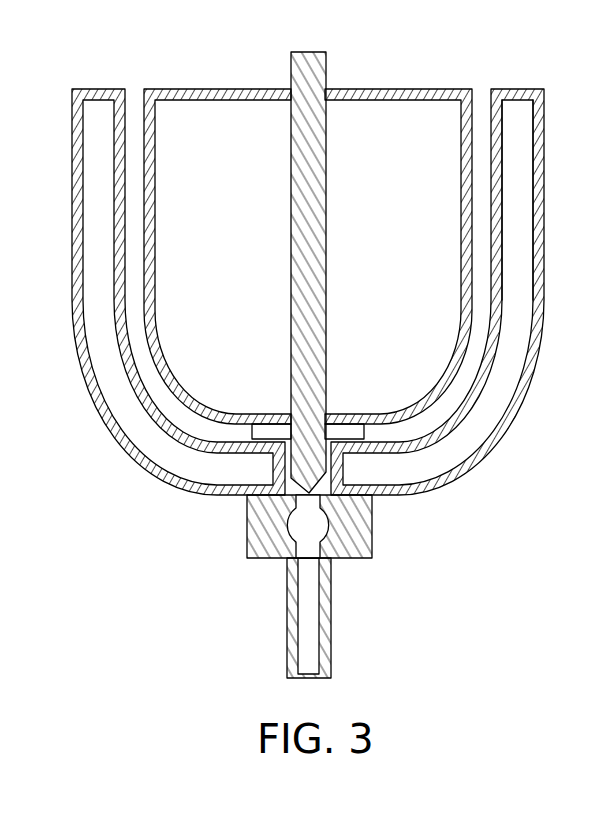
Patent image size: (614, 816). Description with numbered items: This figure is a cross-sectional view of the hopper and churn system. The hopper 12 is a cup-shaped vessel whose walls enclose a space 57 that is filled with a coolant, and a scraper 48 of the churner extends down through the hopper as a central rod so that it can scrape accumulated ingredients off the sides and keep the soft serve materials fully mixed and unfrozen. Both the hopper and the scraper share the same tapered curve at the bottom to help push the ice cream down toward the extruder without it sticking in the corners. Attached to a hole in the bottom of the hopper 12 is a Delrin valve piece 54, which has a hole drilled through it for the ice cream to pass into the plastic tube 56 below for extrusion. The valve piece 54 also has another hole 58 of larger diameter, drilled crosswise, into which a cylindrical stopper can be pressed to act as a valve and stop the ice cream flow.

The hopper 12 is at (526, 91).
The scraper 48 is at (366, 89).
The Delrin valve piece 54 is at (373, 520).
The plastic tube 56 is at (322, 622).
The space 57 is at (522, 134).
The hole 58 is at (300, 531).